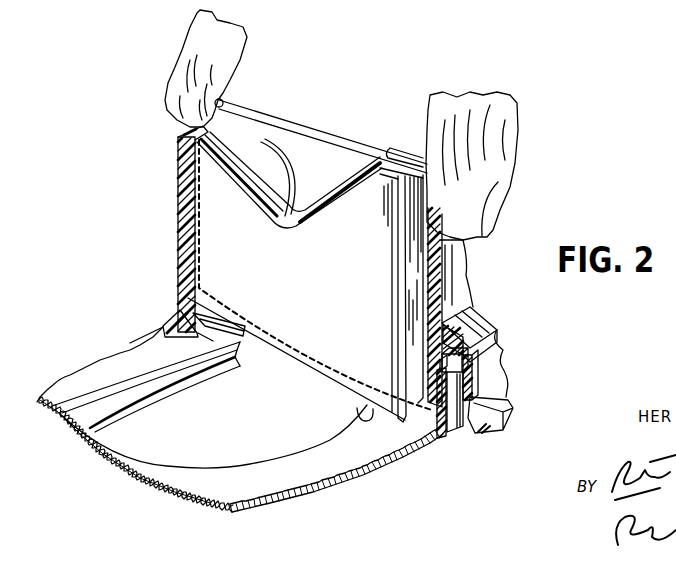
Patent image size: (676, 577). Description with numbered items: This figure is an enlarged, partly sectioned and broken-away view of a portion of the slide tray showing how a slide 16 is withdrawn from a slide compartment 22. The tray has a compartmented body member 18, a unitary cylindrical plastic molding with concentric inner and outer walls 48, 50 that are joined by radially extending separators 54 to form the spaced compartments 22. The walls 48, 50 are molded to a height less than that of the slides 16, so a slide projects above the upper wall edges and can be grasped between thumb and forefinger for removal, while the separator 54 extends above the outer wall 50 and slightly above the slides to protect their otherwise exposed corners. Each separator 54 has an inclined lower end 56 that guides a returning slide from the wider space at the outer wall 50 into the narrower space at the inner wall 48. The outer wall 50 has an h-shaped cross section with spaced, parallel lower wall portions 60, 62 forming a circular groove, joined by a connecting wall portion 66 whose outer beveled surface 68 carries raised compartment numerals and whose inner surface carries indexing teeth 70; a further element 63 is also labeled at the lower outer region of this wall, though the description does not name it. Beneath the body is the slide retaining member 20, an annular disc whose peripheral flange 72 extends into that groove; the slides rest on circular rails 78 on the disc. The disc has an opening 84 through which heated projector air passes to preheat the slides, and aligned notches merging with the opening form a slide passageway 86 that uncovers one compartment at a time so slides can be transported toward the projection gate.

The slide 16 is at (289, 126).
The body member 18 is at (157, 210).
The slide retaining member 20 is at (270, 480).
The slide tray compartment 22 is at (392, 150).
The inner wall 48 is at (186, 252).
The outer wall 50 is at (456, 272).
The separator 54 is at (263, 169).
The lower end of separator 56 is at (275, 347).
The lower wall portion 60 is at (443, 440).
The lower wall portion 62 is at (468, 385).
The lower block 63 is at (513, 414).
The connecting wall portion 66 is at (468, 348).
The outer beveled surface 68 is at (478, 318).
The teeth 70 is at (440, 364).
The peripheral flange 72 is at (455, 422).
The circular rails 78 is at (158, 373).
The opening 84 is at (143, 451).
The slide passageway 86 is at (230, 340).